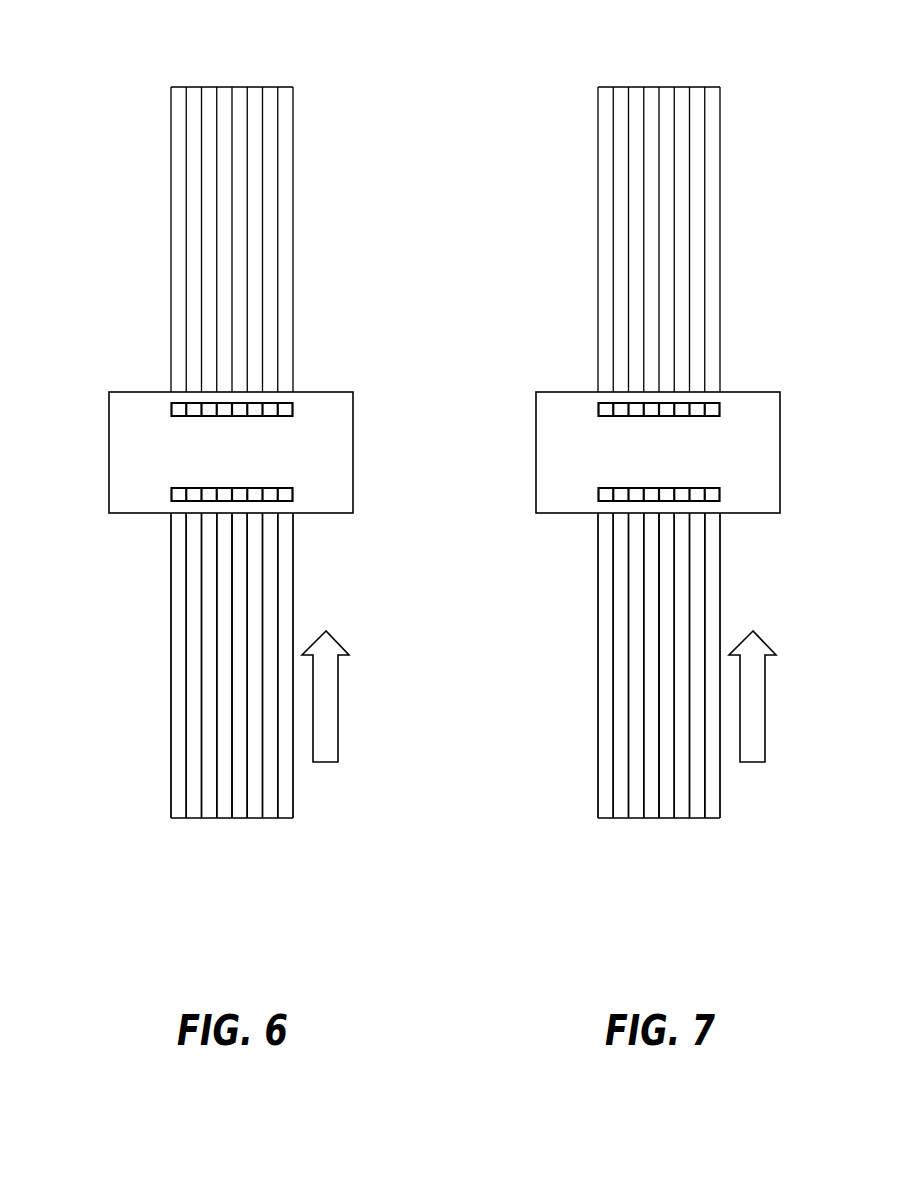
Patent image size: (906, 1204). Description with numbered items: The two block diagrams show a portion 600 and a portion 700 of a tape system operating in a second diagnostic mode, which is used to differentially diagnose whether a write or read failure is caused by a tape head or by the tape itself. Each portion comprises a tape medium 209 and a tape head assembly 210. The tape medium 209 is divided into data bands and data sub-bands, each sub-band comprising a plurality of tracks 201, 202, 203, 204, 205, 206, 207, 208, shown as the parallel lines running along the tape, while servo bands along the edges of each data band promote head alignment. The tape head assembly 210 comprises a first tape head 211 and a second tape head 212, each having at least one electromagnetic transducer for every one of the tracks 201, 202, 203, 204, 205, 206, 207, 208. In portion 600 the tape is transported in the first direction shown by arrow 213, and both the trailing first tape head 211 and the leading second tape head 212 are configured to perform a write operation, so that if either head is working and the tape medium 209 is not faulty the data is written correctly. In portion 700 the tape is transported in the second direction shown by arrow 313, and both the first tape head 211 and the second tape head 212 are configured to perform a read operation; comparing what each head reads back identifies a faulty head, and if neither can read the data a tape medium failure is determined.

In FIG. 6, the portion of a tape system 600 is at (132, 140).
In FIG. 7, the portion of a tape system 700 is at (663, 508).
In FIG. 6, the track 201 is at (178, 818).
In FIG. 7, the track 201 is at (576, 680).
In FIG. 6, the track 202 is at (194, 818).
In FIG. 7, the track 202 is at (590, 695).
In FIG. 6, the track 203 is at (209, 818).
In FIG. 7, the track 203 is at (609, 715).
In FIG. 6, the track 204 is at (224, 818).
In FIG. 7, the track 204 is at (634, 732).
In FIG. 6, the track 205 is at (239, 818).
In FIG. 7, the track 205 is at (671, 732).
In FIG. 6, the track 206 is at (254, 818).
In FIG. 7, the track 206 is at (701, 717).
In FIG. 6, the track 207 is at (270, 818).
In FIG. 7, the track 207 is at (721, 699).
In FIG. 6, the track 208 is at (285, 818).
In FIG. 7, the track 208 is at (738, 682).
In FIG. 6, the tape medium 209 is at (293, 240).
In FIG. 7, the tape medium 209 is at (710, 452).
In FIG. 6, the tape head assembly 210 is at (109, 448).
In FIG. 7, the tape head assembly 210 is at (639, 452).
In FIG. 6, the first tape head 211 is at (292, 410).
In FIG. 7, the first tape head 211 is at (721, 417).
In FIG. 6, the second tape head 212 is at (292, 495).
In FIG. 7, the second tape head 212 is at (721, 494).
In FIG. 6, the arrow 213 is at (338, 700).
In FIG. 7, the arrow 313 is at (780, 696).